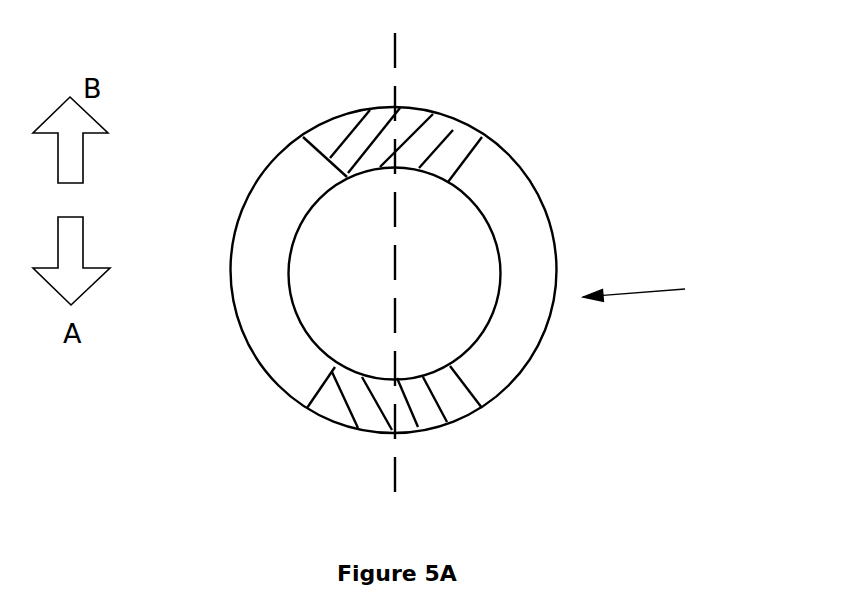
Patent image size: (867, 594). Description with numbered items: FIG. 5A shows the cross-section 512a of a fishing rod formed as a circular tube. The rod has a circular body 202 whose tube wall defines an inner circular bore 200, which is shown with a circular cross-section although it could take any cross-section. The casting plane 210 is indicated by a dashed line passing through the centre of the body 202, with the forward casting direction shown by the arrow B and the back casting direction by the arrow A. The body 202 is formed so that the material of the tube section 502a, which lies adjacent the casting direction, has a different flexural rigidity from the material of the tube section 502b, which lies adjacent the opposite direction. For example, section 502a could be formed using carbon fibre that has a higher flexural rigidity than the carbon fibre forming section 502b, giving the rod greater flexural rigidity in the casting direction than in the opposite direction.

The bore 200 is at (450, 267).
The body 202 is at (282, 345).
The casting plane 210 is at (398, 58).
The tube section 502a is at (453, 130).
The tube section 502b is at (455, 403).
The cross-section 512a is at (663, 290).